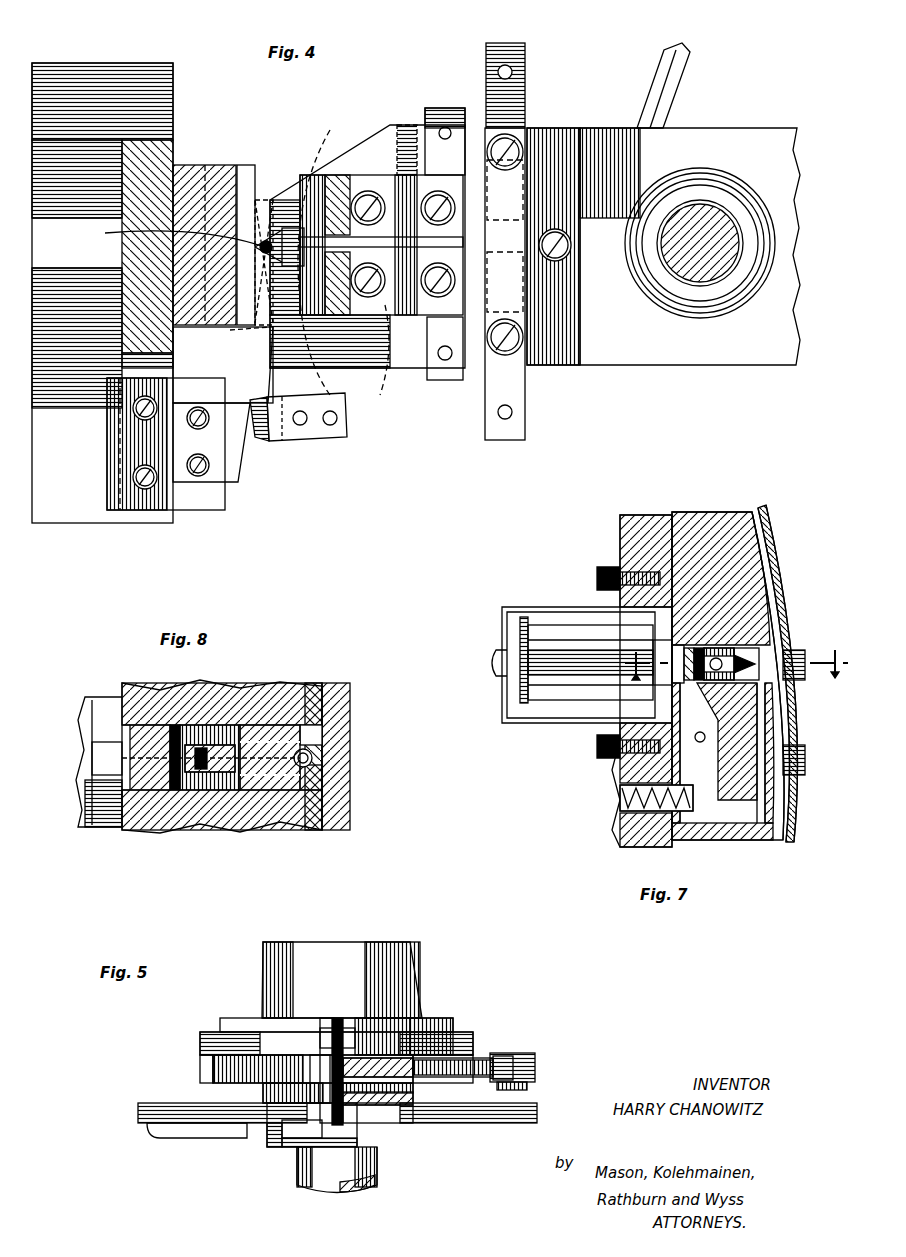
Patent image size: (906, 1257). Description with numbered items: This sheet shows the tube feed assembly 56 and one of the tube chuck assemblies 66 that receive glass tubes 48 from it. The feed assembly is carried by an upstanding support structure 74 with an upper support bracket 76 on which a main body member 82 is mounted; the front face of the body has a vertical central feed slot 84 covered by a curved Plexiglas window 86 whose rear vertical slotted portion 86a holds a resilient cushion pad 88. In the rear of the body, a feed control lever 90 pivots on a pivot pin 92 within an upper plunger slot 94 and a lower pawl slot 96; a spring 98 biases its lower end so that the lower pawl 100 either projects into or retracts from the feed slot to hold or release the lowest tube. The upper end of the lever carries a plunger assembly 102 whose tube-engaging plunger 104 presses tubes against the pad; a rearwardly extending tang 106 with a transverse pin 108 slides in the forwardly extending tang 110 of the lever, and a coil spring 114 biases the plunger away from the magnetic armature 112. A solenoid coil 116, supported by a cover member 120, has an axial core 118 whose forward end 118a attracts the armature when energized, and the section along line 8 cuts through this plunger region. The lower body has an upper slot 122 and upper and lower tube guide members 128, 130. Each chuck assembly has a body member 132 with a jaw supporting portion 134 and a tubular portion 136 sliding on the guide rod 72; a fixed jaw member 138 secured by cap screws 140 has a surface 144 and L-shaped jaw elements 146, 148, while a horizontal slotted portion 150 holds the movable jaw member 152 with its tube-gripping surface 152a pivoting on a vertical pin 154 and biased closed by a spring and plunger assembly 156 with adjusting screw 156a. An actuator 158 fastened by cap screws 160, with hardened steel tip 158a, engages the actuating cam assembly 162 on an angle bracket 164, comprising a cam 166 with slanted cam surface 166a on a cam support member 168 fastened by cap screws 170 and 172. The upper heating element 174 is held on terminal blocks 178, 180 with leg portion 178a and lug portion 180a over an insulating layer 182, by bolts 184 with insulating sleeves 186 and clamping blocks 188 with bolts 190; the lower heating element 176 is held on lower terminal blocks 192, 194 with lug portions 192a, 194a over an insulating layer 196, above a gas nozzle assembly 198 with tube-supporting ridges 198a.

In FIG. 4, the tubes 48 is at (266, 240).
In FIG. 8, the tubes 48 is at (335, 730).
In FIG. 7, the tubes 48 is at (770, 528).
In FIG. 5, the tubes 48 is at (337, 1018).
In FIG. 7, the tube feed assembly 56 is at (824, 560).
In FIG. 4, the tube chuck assembly 66 is at (410, 395).
In FIG. 5, the tube chuck assembly 66 is at (495, 1010).
In FIG. 4, the guide rod 72 is at (735, 262).
In FIG. 5, the guide rod 72 is at (320, 1185).
In FIG. 4, the upstanding support structure 74 is at (173, 82).
In FIG. 4, the upper support bracket 76 is at (125, 250).
In FIG. 7, the upper support bracket 76 is at (650, 832).
In FIG. 4, the main body member 82 is at (195, 140).
In FIG. 8, the main body member 82 is at (276, 822).
In FIG. 7, the main body member 82 is at (680, 513).
In FIG. 8, the central feed slot 84 is at (325, 790).
In FIG. 7, the central feed slot 84 is at (755, 512).
In FIG. 8, the curved Plexiglas window 86 is at (350, 690).
In FIG. 7, the curved Plexiglas window 86 is at (762, 508).
In FIG. 8, the vertical slotted portion 86a is at (330, 750).
In FIG. 8, the resilient cushion pad 88 is at (312, 762).
In FIG. 7, the feed control lever 90 is at (640, 775).
In FIG. 7, the pivot pin 92 is at (700, 742).
In FIG. 8, the upper plunger slot 94 is at (298, 790).
In FIG. 7, the upper plunger slot 94 is at (725, 648).
In FIG. 7, the lower pawl slot 96 is at (740, 840).
In FIG. 7, the spring 98 is at (640, 812).
In FIG. 7, the lower pawl 100 is at (755, 825).
In FIG. 8, the plunger assembly 102 is at (285, 725).
In FIG. 7, the plunger assembly 102 is at (758, 658).
In FIG. 8, the tube-engaging plunger 104 is at (258, 725).
In FIG. 7, the tube-engaging plunger 104 is at (760, 672).
In FIG. 8, the rearwardly extending tang 106 is at (208, 725).
In FIG. 7, the rearwardly extending tang 106 is at (745, 655).
In FIG. 8, the transverse pin 108 is at (176, 725).
In FIG. 7, the transverse pin 108 is at (697, 648).
In FIG. 8, the forwardly extending tang 110 is at (218, 792).
In FIG. 7, the forwardly extending tang 110 is at (762, 690).
In FIG. 8, the magnetic armature 112 is at (140, 725).
In FIG. 7, the magnetic armature 112 is at (675, 668).
In FIG. 8, the coil spring 114 is at (188, 795).
In FIG. 7, the coil spring 114 is at (690, 680).
In FIG. 8, the solenoid coil 116 is at (82, 714).
In FIG. 7, the solenoid coil 116 is at (535, 635).
In FIG. 7, the axial core 118 is at (520, 640).
In FIG. 8, the forward end of core 118a is at (92, 748).
In FIG. 7, the forward end of core 118a is at (655, 652).
In FIG. 7, the cover member 120 is at (553, 607).
In FIG. 4, the upper slot 122 is at (245, 165).
In FIG. 4, the upper tube guide member 128 is at (246, 165).
In FIG. 5, the lower tube guide member 130 is at (411, 1124).
In FIG. 4, the body member 132 is at (640, 360).
In FIG. 5, the body member 132 is at (364, 961).
In FIG. 4, the jaw supporting portion 134 is at (580, 370).
In FIG. 4, the tubular portion 136 is at (750, 228).
In FIG. 5, the tubular portion 136 is at (378, 942).
In FIG. 4, the fixed jaw member 138 is at (372, 165).
In FIG. 5, the fixed jaw member 138 is at (215, 1068).
In FIG. 4, the cap screws 140 is at (522, 145).
In FIG. 4, the surface 144 is at (245, 340).
In FIG. 5, the surface 144 is at (470, 1077).
In FIG. 4, the L-shaped jaw element 146 is at (292, 228).
In FIG. 5, the L-shaped jaw element 146 is at (318, 1040).
In FIG. 5, the L-shaped jaw element 148 is at (315, 1060).
In FIG. 4, the horizontal slotted portion 150 is at (374, 356).
In FIG. 4, the movable jaw member 152 is at (223, 365).
In FIG. 5, the movable jaw member 152 is at (478, 1058).
In FIG. 4, the tube-gripping surface 152a is at (240, 332).
In FIG. 4, the vertical pin 154 is at (272, 375).
In FIG. 4, the spring and plunger assembly 156 is at (445, 141).
In FIG. 4, the adjusting screw 156a is at (405, 125).
In FIG. 4, the actuator 158 is at (335, 440).
In FIG. 5, the actuator 158 is at (530, 1053).
In FIG. 4, the hardened steel tip 158a is at (255, 438).
In FIG. 5, the hardened steel tip 158a is at (536, 1065).
In FIG. 4, the cap screws 160 is at (306, 425).
In FIG. 5, the cap screws 160 is at (527, 1086).
In FIG. 4, the actuating cam assembly 162 is at (215, 515).
In FIG. 4, the angle bracket 164 is at (115, 378).
In FIG. 4, the cam 166 is at (240, 478).
In FIG. 4, the slanted cam surface 166a is at (240, 485).
In FIG. 4, the cam support member 168 is at (192, 512).
In FIG. 4, the cap screws 170 is at (135, 477).
In FIG. 4, the cap screws 172 is at (187, 462).
In FIG. 4, the upper heating element 174 is at (171, 235).
In FIG. 5, the upper heating element 174 is at (348, 1018).
In FIG. 5, the lower heating element 176 is at (280, 1130).
In FIG. 4, the terminal block 178 is at (505, 284).
In FIG. 5, the terminal block 178 is at (265, 1018).
In FIG. 4, the leg portion 178a is at (455, 108).
In FIG. 5, the leg portion 178a is at (205, 1032).
In FIG. 4, the terminal block 180 is at (466, 302).
In FIG. 5, the terminal block 180 is at (418, 1018).
In FIG. 4, the lug portion 180a is at (435, 385).
In FIG. 5, the lug portion 180a is at (460, 1032).
In FIG. 5, the insulating layer 182 is at (205, 1065).
In FIG. 4, the bolts 184 is at (372, 192).
In FIG. 4, the insulating sleeves 186 is at (335, 178).
In FIG. 4, the clamping blocks 188 is at (345, 240).
In FIG. 5, the clamping blocks 188 is at (355, 1030).
In FIG. 4, the bolts 190 is at (336, 248).
In FIG. 5, the lower terminal block 192 is at (275, 1092).
In FIG. 4, the lug portion 192a is at (528, 55).
In FIG. 5, the lug portion 192a is at (138, 1110).
In FIG. 5, the lower terminal block 194 is at (400, 1123).
In FIG. 4, the lug portion 194a is at (528, 438).
In FIG. 5, the lug portion 194a is at (490, 1123).
In FIG. 5, the insulating layer 196 is at (380, 1085).
In FIG. 5, the gas nozzle assembly 198 is at (300, 1135).
In FIG. 5, the tube-supporting ridges 198a is at (335, 1150).
In FIG. 7, the section line 8- 8 is at (727, 660).